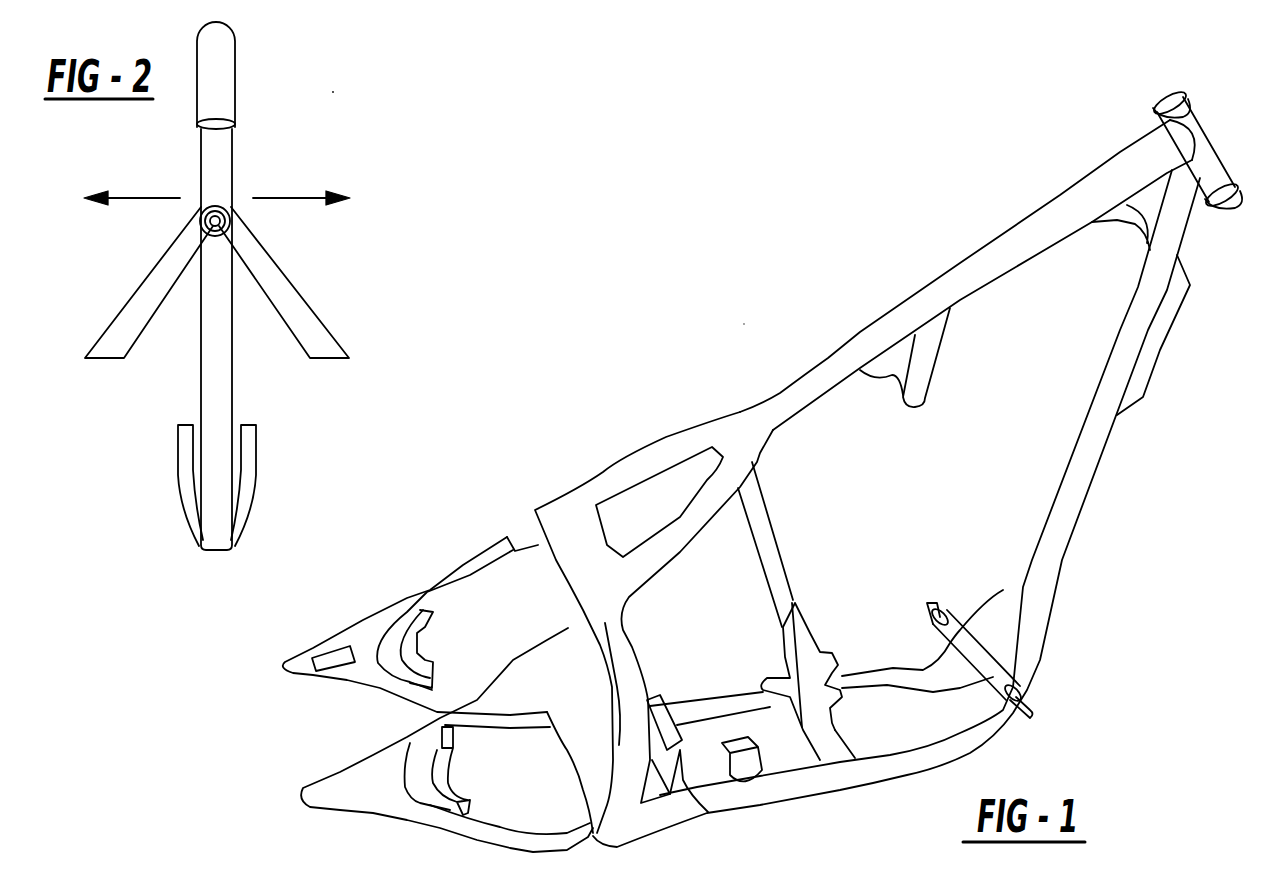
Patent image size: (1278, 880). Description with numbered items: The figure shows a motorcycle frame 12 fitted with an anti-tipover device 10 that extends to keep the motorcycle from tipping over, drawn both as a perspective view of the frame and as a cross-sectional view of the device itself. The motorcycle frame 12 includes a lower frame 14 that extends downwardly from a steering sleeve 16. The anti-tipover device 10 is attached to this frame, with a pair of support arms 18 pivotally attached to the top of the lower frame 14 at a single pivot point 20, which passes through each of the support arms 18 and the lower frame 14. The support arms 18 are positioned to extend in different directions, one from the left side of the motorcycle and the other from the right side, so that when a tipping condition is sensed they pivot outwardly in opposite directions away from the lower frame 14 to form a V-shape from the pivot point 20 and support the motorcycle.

In FIG. 2, the anti-tipover device 10 is at (332, 93).
In FIG. 1, the anti-tipover device 10 is at (745, 325).
In FIG. 2, the motorcycle frame 12 is at (222, 362).
In FIG. 1, the motorcycle frame 12 is at (982, 268).
In FIG. 1, the lower frame 14 is at (1133, 403).
In FIG. 2, the steering sleeve 16 is at (236, 60).
In FIG. 1, the steering sleeve 16 is at (1205, 126).
In FIG. 2, the support arms 18 is at (160, 256).
In FIG. 2, the pivot point 20 is at (221, 214).